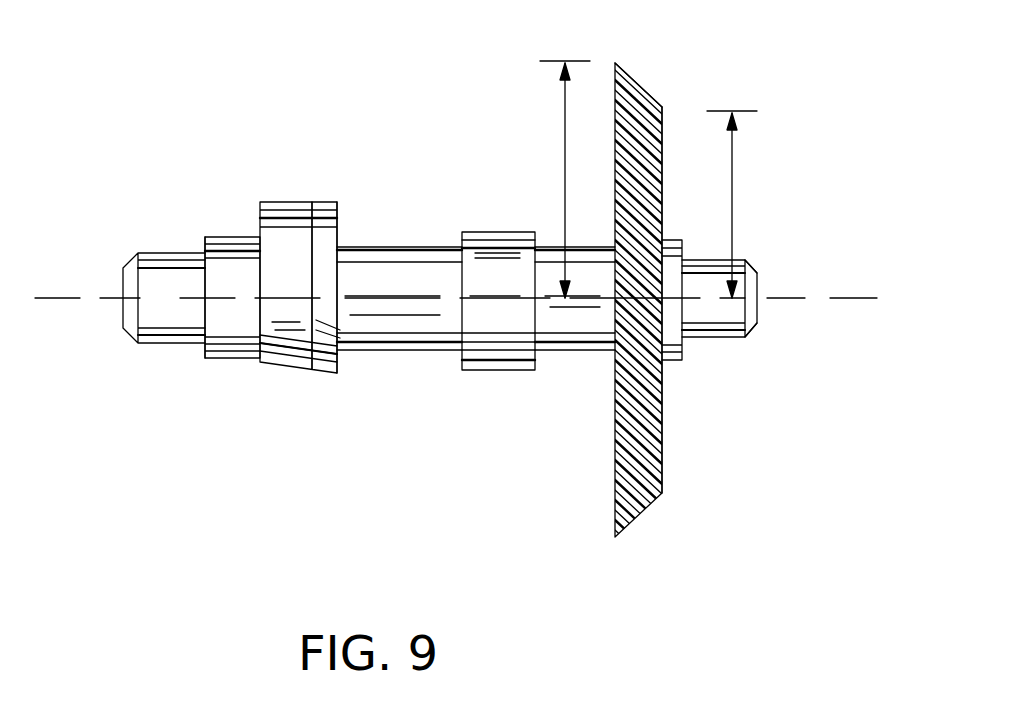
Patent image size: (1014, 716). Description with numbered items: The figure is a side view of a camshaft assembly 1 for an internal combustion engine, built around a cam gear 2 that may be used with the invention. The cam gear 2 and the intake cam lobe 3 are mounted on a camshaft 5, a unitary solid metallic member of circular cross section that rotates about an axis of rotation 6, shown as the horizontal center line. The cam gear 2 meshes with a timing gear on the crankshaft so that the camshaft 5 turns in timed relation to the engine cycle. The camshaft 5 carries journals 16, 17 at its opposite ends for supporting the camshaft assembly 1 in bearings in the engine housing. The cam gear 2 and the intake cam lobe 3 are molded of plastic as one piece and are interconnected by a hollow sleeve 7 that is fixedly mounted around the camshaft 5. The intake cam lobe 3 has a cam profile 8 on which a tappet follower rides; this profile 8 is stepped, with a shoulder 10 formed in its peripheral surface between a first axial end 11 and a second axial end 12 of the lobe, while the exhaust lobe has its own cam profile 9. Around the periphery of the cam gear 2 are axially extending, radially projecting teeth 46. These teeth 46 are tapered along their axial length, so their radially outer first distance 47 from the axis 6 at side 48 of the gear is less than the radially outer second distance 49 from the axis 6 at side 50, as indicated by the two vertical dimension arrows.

The camshaft assembly 1 is at (168, 227).
The cam gear 2 is at (660, 294).
The intake cam lobe 3 is at (299, 280).
The camshaft 5 is at (769, 319).
The axis of rotation 6 is at (862, 298).
The hollow sleeve 7 is at (403, 246).
The cam profile 8 is at (277, 202).
The cam profile 9 is at (505, 230).
The shoulder 10 is at (339, 337).
The first axial end 11 is at (257, 228).
The second axial end 12 is at (340, 227).
The journal 16 is at (233, 358).
The journal 17 is at (733, 345).
The teeth 46 is at (604, 407).
The first distance 47 is at (733, 205).
The side 48 is at (666, 148).
The second distance 49 is at (565, 118).
The side 50 is at (614, 110).